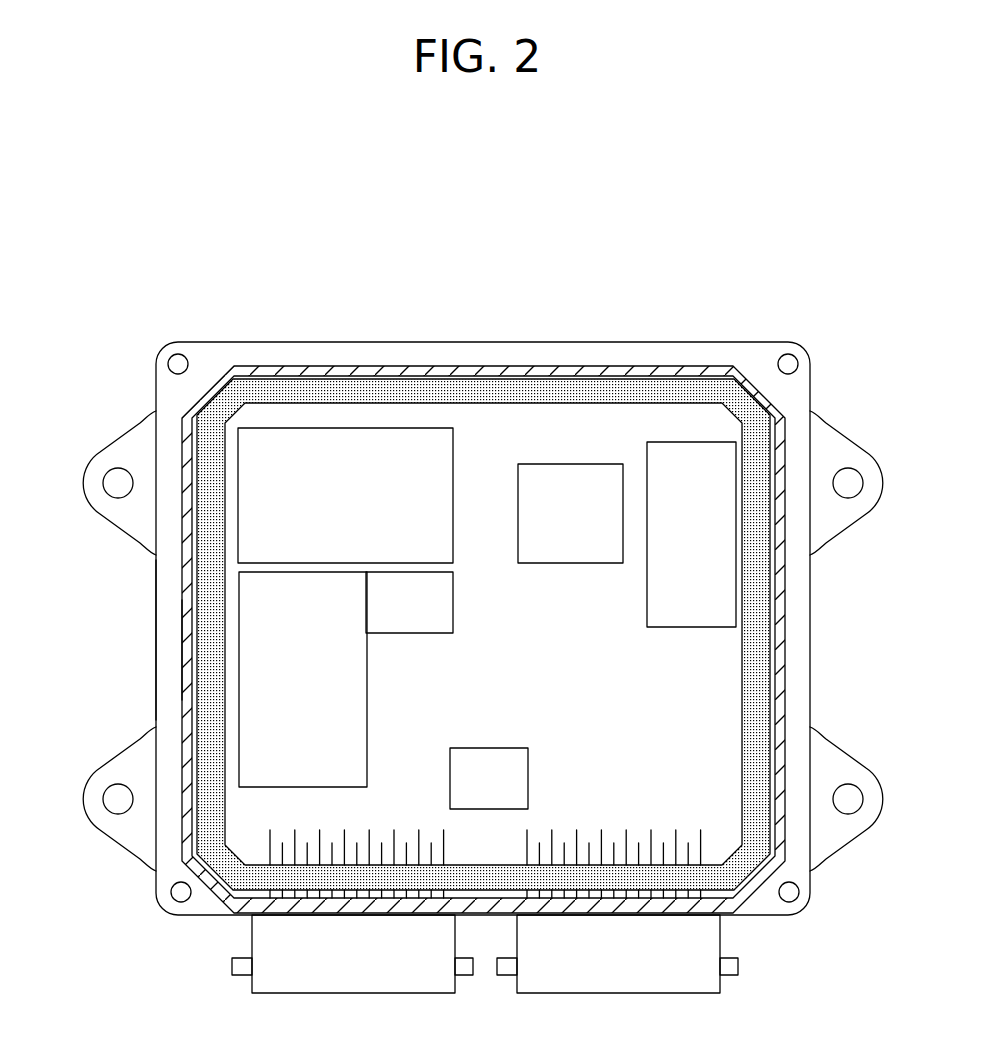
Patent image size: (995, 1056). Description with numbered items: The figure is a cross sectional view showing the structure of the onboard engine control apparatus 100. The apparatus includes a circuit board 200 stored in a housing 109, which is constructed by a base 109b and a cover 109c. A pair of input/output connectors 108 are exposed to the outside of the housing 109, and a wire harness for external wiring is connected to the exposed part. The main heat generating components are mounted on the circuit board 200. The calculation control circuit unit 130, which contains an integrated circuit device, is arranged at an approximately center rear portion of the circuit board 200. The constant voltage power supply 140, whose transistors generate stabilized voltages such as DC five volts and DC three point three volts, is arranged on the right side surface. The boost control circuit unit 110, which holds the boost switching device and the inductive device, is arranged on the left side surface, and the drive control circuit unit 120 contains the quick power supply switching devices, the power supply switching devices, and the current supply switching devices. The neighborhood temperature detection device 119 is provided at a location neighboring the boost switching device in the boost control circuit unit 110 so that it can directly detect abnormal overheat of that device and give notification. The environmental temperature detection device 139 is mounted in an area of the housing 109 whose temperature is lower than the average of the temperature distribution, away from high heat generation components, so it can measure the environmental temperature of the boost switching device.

The onboard engine control apparatus 100 is at (782, 318).
The circuit board 200 is at (368, 397).
The input/output connector 108 is at (252, 937).
The housing 109 is at (51, 662).
The base 109b is at (155, 613).
The cover 109c is at (182, 655).
The boost control circuit unit 110 is at (345, 495).
The neighborhood temperature detection device 119 is at (409, 602).
The drive control circuit unit 120 is at (303, 679).
The calculation control circuit unit 130 is at (570, 513).
The environmental temperature detection device 139 is at (489, 778).
The constant voltage power supply 140 is at (691, 534).